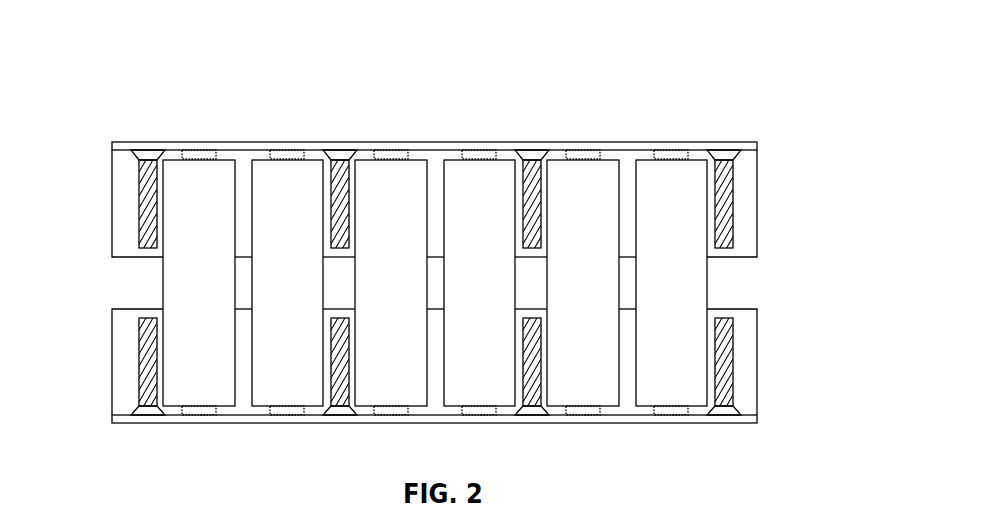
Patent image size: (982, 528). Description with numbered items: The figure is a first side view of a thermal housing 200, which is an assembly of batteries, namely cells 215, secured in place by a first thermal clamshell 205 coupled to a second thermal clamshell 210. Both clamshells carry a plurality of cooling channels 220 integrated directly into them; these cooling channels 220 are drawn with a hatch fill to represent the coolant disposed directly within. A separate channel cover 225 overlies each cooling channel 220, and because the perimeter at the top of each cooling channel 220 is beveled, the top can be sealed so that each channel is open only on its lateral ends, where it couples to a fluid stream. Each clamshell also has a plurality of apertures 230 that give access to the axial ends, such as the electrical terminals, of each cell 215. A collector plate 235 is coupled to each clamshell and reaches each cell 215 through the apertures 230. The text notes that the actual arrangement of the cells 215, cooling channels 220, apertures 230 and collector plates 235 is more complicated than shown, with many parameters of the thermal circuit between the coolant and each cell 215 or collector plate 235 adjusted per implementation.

The thermal housing 200 is at (446, 252).
The first thermal clamshell 205 is at (758, 193).
The second thermal clamshell 210 is at (758, 368).
The cells 215 is at (182, 294).
The cooling channels 220 is at (436, 283).
The channel cover 225 is at (532, 152).
The apertures 230 is at (291, 151).
The collector plate 235 is at (718, 143).